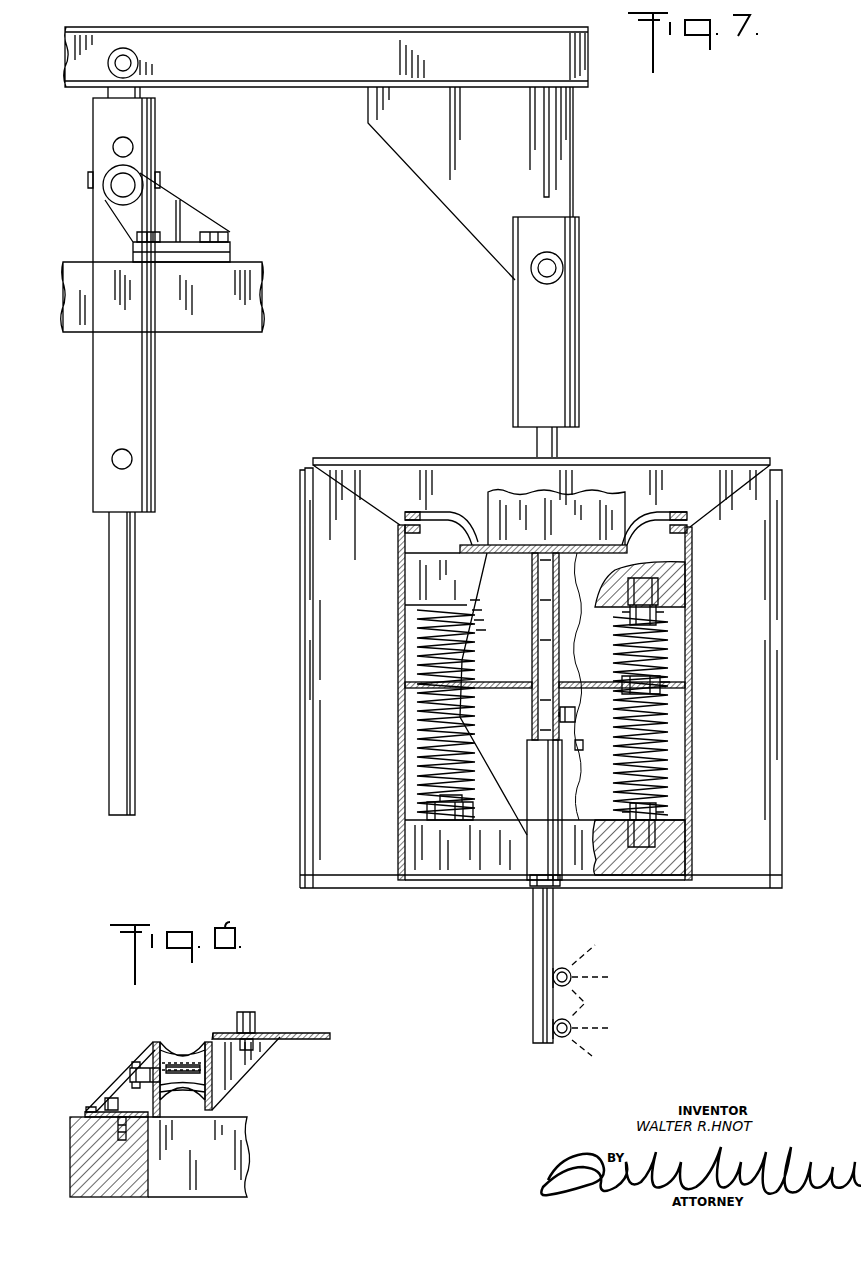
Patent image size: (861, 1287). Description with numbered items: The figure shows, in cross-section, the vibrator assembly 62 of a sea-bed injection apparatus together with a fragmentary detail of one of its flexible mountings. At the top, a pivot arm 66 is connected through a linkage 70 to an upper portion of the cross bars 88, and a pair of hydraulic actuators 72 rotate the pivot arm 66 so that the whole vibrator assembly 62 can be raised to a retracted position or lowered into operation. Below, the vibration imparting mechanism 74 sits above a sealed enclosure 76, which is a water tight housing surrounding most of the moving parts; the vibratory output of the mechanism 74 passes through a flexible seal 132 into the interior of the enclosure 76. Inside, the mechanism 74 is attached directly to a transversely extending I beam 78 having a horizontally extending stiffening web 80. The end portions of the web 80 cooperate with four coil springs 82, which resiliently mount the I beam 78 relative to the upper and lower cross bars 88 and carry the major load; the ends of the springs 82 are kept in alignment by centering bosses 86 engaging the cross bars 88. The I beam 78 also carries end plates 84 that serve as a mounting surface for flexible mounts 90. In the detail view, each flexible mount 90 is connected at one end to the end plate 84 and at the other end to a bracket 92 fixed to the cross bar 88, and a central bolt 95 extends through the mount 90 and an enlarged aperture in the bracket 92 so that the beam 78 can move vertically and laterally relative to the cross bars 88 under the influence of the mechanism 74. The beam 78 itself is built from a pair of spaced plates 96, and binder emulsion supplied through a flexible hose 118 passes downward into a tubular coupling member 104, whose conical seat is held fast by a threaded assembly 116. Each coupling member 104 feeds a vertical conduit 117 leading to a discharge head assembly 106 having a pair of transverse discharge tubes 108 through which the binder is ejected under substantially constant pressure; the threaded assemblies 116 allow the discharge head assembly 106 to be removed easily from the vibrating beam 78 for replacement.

In FIG. 7, the vibrator assembly 62 is at (562, 639).
In FIG. 7, the pivot arm 66 is at (270, 90).
In FIG. 7, the linkage 70 is at (570, 330).
In FIG. 7, the hydraulic actuators 72 is at (142, 386).
In FIG. 7, the vibration imparting mechanism 74 is at (570, 522).
In FIG. 7, the sealed enclosure 76 is at (782, 575).
In FIG. 7, the I beam 78 is at (523, 606).
In FIG. 7, the stiffening web 80 is at (492, 680).
In FIG. 7, the coil springs 82 is at (417, 652).
In FIG. 7, the end plates 84 is at (506, 637).
In FIG. 8, the end plates 84 is at (306, 1030).
In FIG. 7, the centering bosses 86 is at (652, 600).
In FIG. 7, the cross bars 88 is at (675, 572).
In FIG. 8, the cross bars 88 is at (70, 1130).
In FIG. 8, the flexible mounts 90 is at (193, 1036).
In FIG. 8, the bracket 92 is at (100, 1105).
In FIG. 8, the central bolt 95 is at (193, 1088).
In FIG. 7, the spaced plates 96 is at (530, 697).
In FIG. 7, the tubular coupling member 104 is at (533, 760).
In FIG. 7, the discharge head assembly 106 is at (558, 972).
In FIG. 7, the transverse discharge tubes 108 is at (558, 1012).
In FIG. 7, the threaded assembly 116 is at (527, 880).
In FIG. 7, the vertical conduit 117 is at (538, 911).
In FIG. 7, the flexible hose 118 is at (578, 745).
In FIG. 7, the flexible seal 132 is at (474, 540).